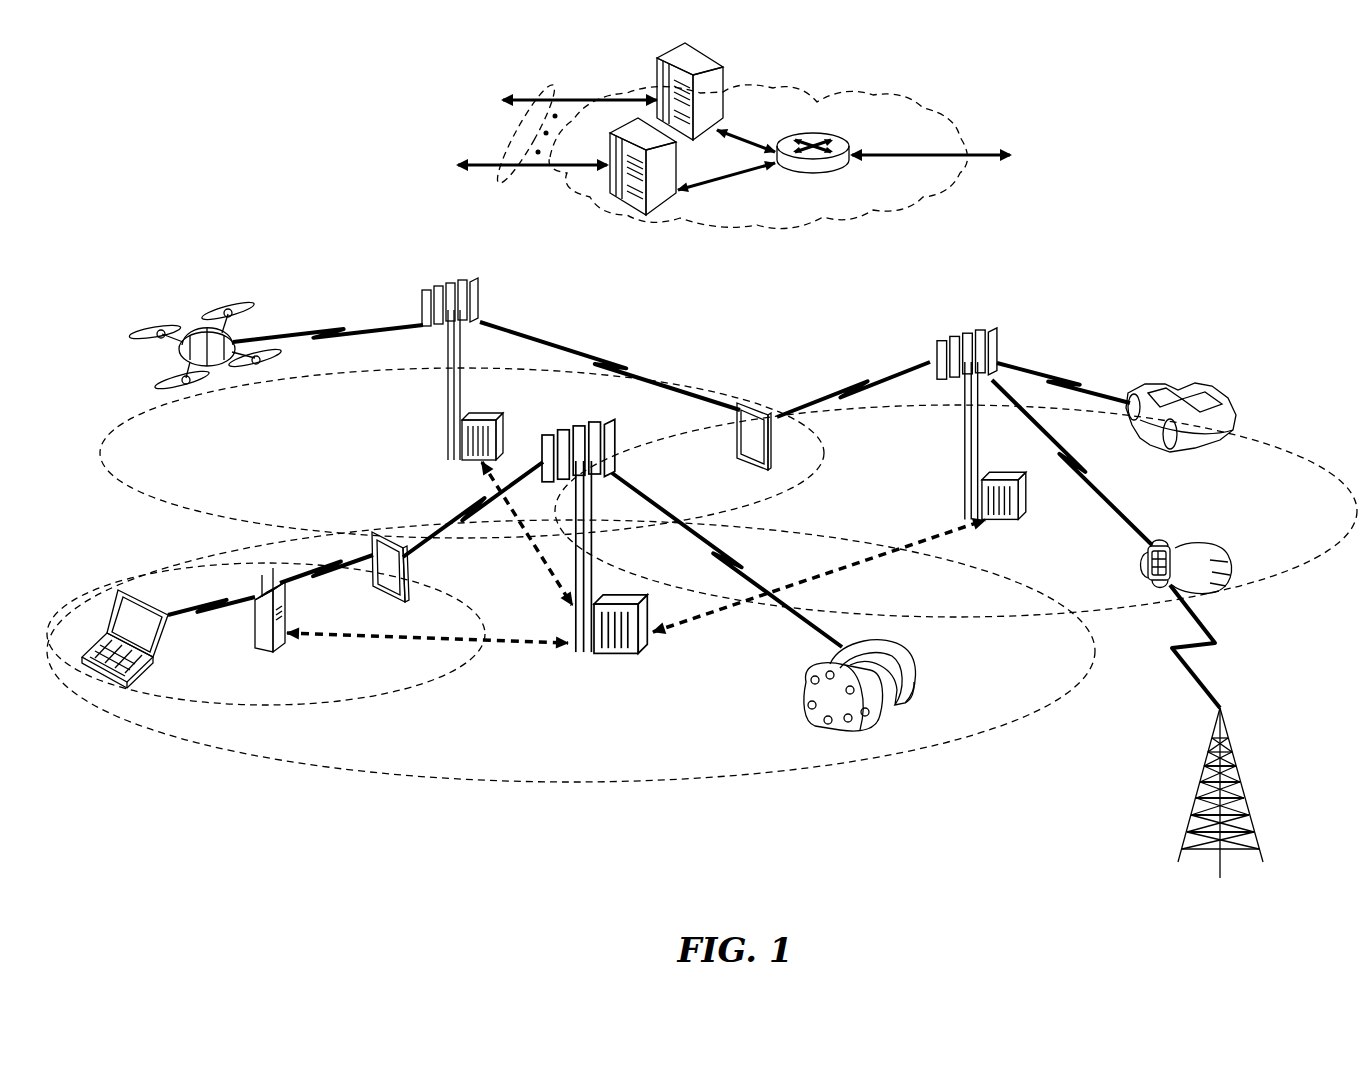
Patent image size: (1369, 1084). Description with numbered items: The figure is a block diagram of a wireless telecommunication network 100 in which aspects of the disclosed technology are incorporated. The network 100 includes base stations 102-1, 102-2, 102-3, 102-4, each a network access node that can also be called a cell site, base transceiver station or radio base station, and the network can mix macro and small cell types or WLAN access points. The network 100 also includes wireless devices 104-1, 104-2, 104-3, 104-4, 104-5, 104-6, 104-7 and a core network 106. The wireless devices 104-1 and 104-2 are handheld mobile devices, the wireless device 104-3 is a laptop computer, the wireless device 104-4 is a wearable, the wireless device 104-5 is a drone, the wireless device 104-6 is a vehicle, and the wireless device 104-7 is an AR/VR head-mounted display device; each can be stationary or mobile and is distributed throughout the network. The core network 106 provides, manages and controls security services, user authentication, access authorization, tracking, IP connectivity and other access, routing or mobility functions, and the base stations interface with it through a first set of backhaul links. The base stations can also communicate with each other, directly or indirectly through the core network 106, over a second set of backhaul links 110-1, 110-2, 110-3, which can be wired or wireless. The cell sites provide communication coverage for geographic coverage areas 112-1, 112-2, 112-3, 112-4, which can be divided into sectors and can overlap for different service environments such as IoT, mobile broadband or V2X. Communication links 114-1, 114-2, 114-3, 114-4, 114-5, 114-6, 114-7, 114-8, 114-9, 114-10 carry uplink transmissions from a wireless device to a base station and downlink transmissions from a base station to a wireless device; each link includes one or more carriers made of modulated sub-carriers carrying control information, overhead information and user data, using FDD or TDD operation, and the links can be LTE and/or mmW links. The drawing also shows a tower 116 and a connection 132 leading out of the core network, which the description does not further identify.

The wireless telecommunication network 100 is at (1252, 147).
The base station 102-1 is at (582, 653).
The base station 102-2 is at (443, 407).
The base station 102-3 is at (960, 440).
The base station 102-4 is at (253, 638).
The wireless device 104-1 is at (407, 580).
The wireless device 104-2 is at (735, 440).
The wireless device 104-3 is at (102, 682).
The wireless device 104-4 is at (1170, 540).
The wireless device 104-5 is at (215, 375).
The wireless device 104-6 is at (1200, 393).
The wireless device 104-7 is at (918, 665).
The core network 106 is at (843, 222).
The backhaul link 110-1 is at (327, 633).
The backhaul link 110-2 is at (883, 562).
The backhaul link 110-3 is at (547, 565).
The geographic coverage area 112-1 is at (510, 781).
The geographic coverage area 112-2 is at (388, 693).
The geographic coverage area 112-3 is at (165, 513).
The geographic coverage area 112-4 is at (1270, 441).
The communication link 114-1 is at (745, 563).
The communication link 114-2 is at (470, 510).
The communication link 114-3 is at (183, 610).
The communication link 114-4 is at (325, 583).
The communication link 114-5 is at (340, 320).
The communication link 114-6 is at (615, 358).
The communication link 114-7 is at (858, 380).
The communication link 114-8 is at (1075, 470).
The communication link 114-9 is at (1060, 378).
The communication link 114-10 is at (1198, 650).
The broadcast tower 116 is at (1233, 777).
The external network connection 132 is at (536, 183).